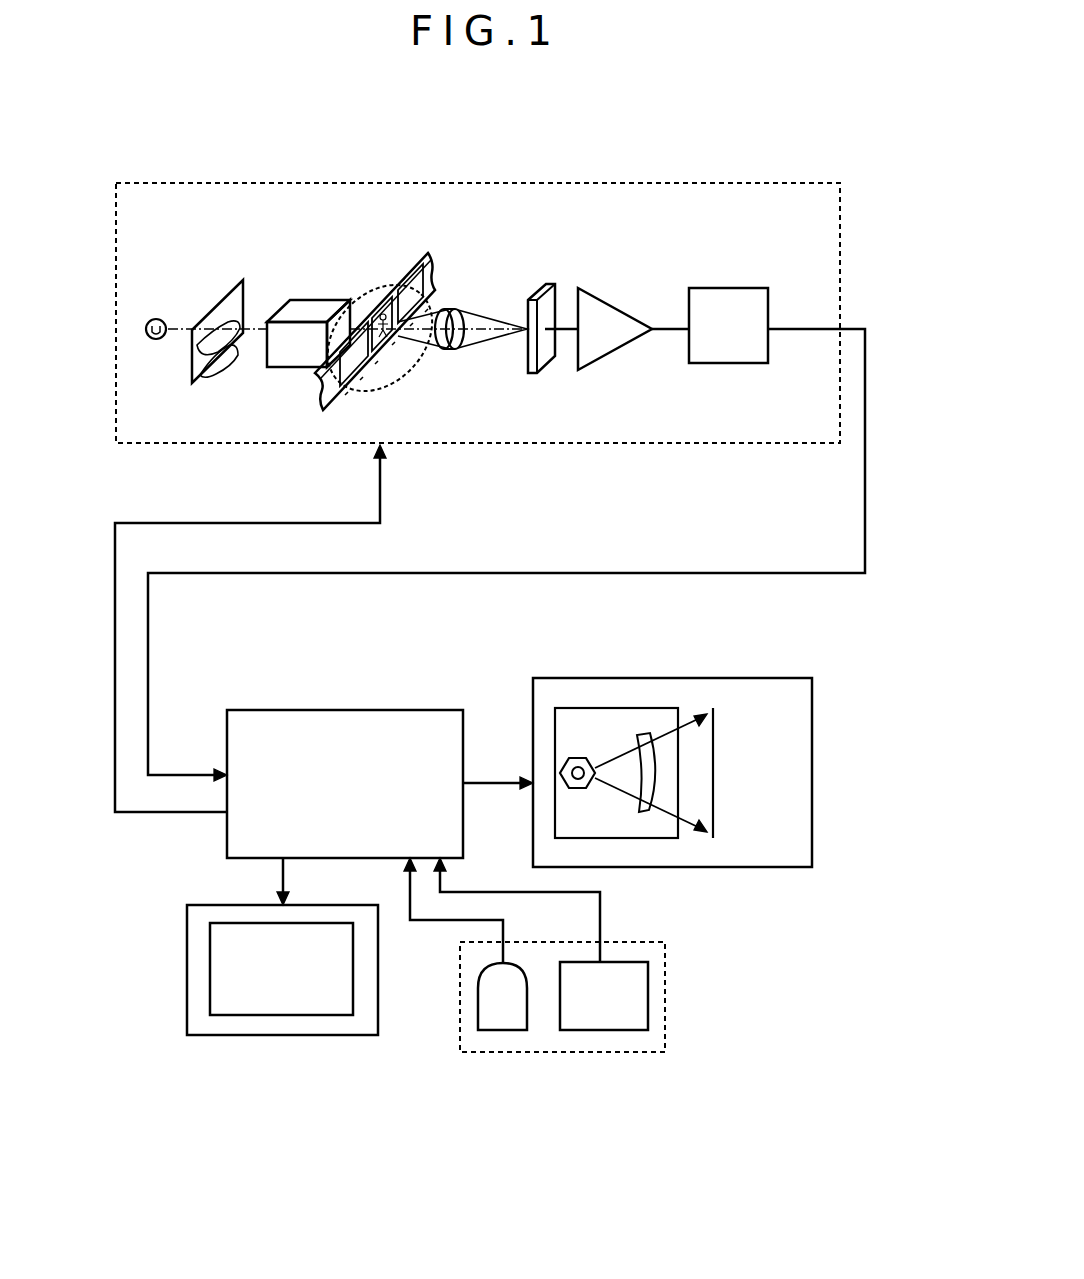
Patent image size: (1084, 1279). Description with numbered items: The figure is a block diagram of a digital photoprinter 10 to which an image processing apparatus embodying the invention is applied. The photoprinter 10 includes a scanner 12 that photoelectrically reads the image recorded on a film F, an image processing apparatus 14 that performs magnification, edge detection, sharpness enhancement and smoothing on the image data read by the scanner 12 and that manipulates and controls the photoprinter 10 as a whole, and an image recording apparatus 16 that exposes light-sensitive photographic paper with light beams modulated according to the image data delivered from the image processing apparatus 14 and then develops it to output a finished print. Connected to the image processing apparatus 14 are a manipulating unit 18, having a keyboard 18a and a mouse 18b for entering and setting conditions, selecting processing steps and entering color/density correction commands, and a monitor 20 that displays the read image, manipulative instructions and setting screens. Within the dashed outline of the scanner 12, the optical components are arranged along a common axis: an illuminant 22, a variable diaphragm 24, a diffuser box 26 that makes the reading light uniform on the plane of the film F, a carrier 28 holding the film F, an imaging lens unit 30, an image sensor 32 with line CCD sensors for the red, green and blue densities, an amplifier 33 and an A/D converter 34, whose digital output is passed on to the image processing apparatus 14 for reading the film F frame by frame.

The digital photoprinter 10 is at (765, 104).
The scanner 12 is at (316, 183).
The image processing apparatus 14 is at (344, 710).
The image recording apparatus 16 is at (668, 678).
The manipulating unit 18 is at (543, 1054).
The keyboard 18a is at (604, 1031).
The mouse 18b is at (502, 1031).
The monitor 20 is at (280, 1036).
The illuminant 22 is at (156, 320).
The variable diaphragm 24 is at (225, 297).
The diffuser box 26 is at (307, 313).
The carrier 28 is at (410, 377).
The imaging lens unit 30 is at (455, 310).
The image sensor 32 is at (547, 300).
The amplifier 33 is at (618, 349).
The A/D converter 34 is at (733, 366).
The film F is at (421, 268).